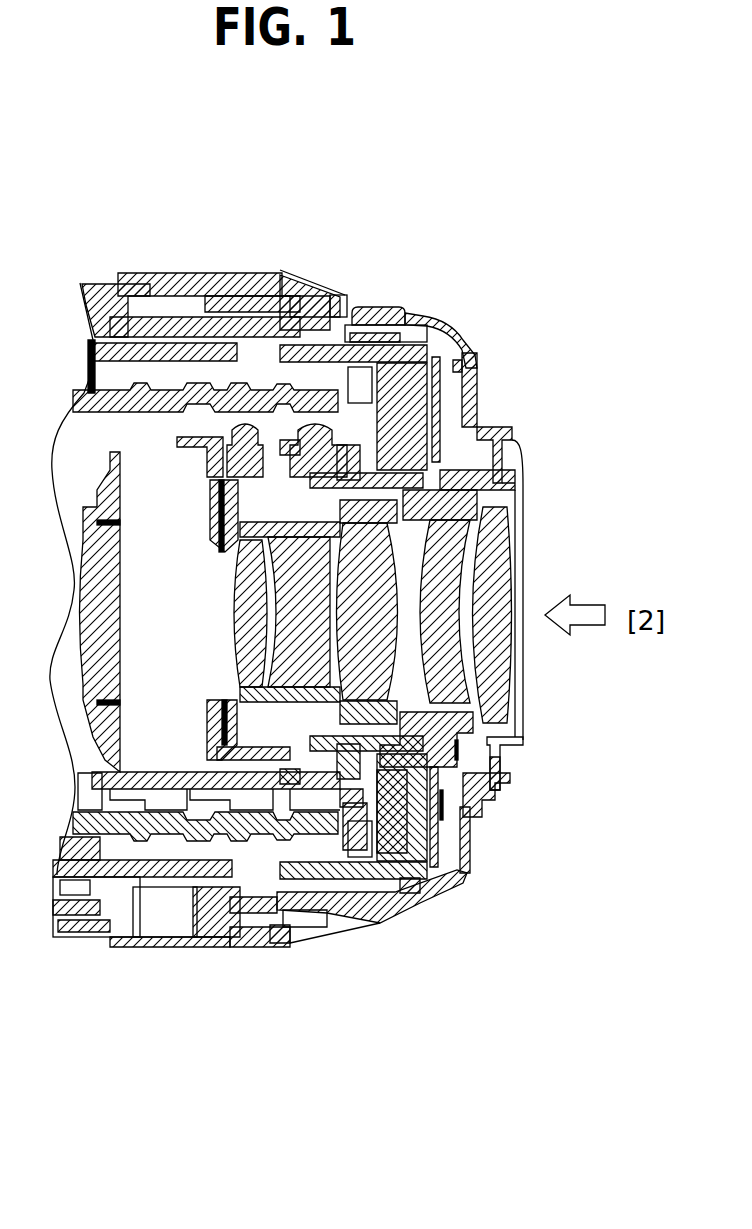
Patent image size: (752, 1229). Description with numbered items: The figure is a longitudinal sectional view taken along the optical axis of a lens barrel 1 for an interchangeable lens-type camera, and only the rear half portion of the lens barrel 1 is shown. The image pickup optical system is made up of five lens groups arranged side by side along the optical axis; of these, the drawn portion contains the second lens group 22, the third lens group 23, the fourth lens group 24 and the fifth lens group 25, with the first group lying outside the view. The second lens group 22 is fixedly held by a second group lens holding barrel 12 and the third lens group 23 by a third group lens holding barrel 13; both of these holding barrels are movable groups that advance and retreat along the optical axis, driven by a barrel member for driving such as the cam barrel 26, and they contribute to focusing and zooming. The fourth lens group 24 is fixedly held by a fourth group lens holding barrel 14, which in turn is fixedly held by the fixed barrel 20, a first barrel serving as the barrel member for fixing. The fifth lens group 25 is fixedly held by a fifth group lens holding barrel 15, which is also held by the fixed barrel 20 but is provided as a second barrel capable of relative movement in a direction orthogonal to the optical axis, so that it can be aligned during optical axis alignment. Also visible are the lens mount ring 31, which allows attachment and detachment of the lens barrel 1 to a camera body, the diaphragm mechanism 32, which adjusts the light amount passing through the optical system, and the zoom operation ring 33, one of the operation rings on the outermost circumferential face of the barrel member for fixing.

The lens barrel 1 is at (386, 243).
The second group lens holding barrel 12 is at (135, 750).
The third group lens holding barrel 13 is at (312, 720).
The fourth group lens holding barrel 14 is at (357, 720).
The fifth group lens holding barrel 15 is at (470, 700).
The fixed barrel 20 is at (405, 720).
The second lens group 22 is at (88, 720).
The third lens group 23 is at (300, 650).
The fourth lens group 24 is at (433, 640).
The fifth lens group 25 is at (500, 546).
The cam barrel 26 is at (237, 403).
The lens mount ring 31 is at (478, 371).
The diaphragm mechanism 32 is at (184, 740).
The zoom operation ring 33 is at (222, 275).